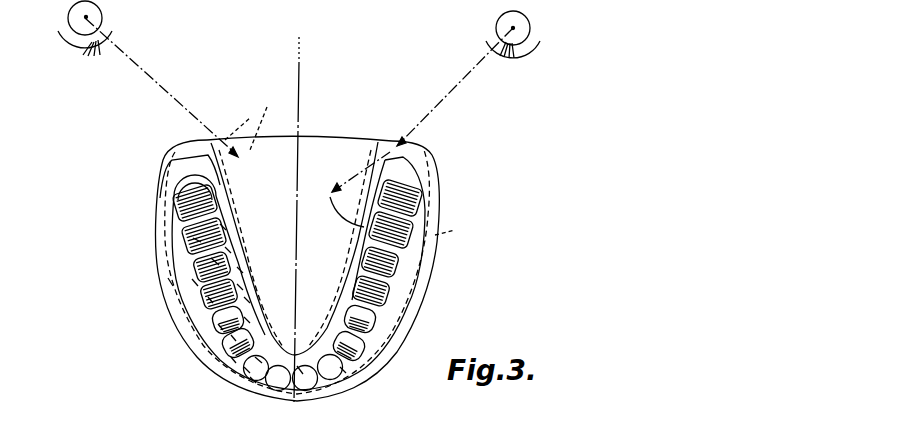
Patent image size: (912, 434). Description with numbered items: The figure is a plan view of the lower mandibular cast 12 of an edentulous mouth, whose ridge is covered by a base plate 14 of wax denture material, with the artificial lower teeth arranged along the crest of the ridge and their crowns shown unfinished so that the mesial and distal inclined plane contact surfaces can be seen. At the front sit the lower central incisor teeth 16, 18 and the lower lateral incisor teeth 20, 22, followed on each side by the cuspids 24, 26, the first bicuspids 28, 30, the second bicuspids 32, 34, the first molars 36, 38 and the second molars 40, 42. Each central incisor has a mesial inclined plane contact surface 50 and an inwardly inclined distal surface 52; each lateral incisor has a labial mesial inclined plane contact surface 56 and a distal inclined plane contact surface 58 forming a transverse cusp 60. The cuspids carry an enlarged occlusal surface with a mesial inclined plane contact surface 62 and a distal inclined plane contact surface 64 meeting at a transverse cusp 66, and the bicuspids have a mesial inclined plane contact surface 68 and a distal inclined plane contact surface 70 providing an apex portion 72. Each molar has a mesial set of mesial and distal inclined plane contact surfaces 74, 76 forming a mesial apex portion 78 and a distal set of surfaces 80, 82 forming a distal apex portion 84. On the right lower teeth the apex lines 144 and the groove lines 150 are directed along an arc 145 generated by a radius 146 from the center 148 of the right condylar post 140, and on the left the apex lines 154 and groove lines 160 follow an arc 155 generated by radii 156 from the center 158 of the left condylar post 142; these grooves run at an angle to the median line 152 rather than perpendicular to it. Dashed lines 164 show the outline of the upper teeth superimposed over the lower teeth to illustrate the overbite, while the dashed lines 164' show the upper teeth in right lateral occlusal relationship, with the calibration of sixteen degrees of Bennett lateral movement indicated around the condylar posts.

The lower mandibular cast 12 is at (357, 143).
The base plate 14 is at (160, 200).
The lower central incisor tooth 16 is at (277, 392).
The lower central incisor tooth 18 is at (312, 393).
The lower lateral incisor tooth 20 is at (248, 388).
The lower lateral incisor tooth 22 is at (336, 388).
The lower cuspid tooth 24 is at (215, 352).
The lower cuspid tooth 26 is at (335, 333).
The first bicuspid 28 is at (215, 313).
The first bicuspid 30 is at (380, 320).
The second bicuspid 32 is at (198, 295).
The second bicuspid 34 is at (385, 297).
The first molar 36 is at (176, 272).
The first molar 38 is at (407, 267).
The second molar 40 is at (176, 220).
The second molar 42 is at (425, 218).
The mesial inclined plane contact surface 50 is at (293, 395).
The distal surface 52 is at (300, 370).
The labial mesial inclined plane contact surface 56 is at (343, 370).
The distal inclined plane contact surface 58 is at (247, 370).
The transverse cusp 60 is at (258, 360).
The mesial inclined plane contact surface 62 is at (233, 360).
The distal inclined plane contact surface 64 is at (233, 338).
The transverse cusp 66 is at (247, 320).
The mesial inclined plane contact surface 68 is at (220, 327).
The distal inclined plane contact surface 70 is at (240, 270).
The apex portion 72 is at (247, 300).
The mesial inclined plane contact surface 74 is at (195, 283).
The distal inclined plane contact surface 76 is at (170, 282).
The mesial apex portion 78 is at (228, 250).
The mesial inclined plane contact surface 80 is at (215, 262).
The distal inclined plane contact surface 82 is at (197, 240).
The distal apex portion 84 is at (223, 227).
The right condylar post 140 is at (67, 14).
The left condylar post 142 is at (495, 25).
The apex lines 144 is at (262, 345).
The arc 145 is at (263, 121).
The radius 146 is at (163, 88).
The center of right condylar post 148 is at (88, 17).
The groove lines 150 is at (219, 192).
The median line 152 is at (300, 71).
The apex lines 154 is at (390, 328).
The arc 155 is at (360, 189).
The radius 156 is at (432, 92).
The center of left condylar post 158 is at (513, 28).
The groove lines 160 is at (395, 318).
The dashed lines 164 is at (314, 272).
The dashed lines 164' is at (366, 182).